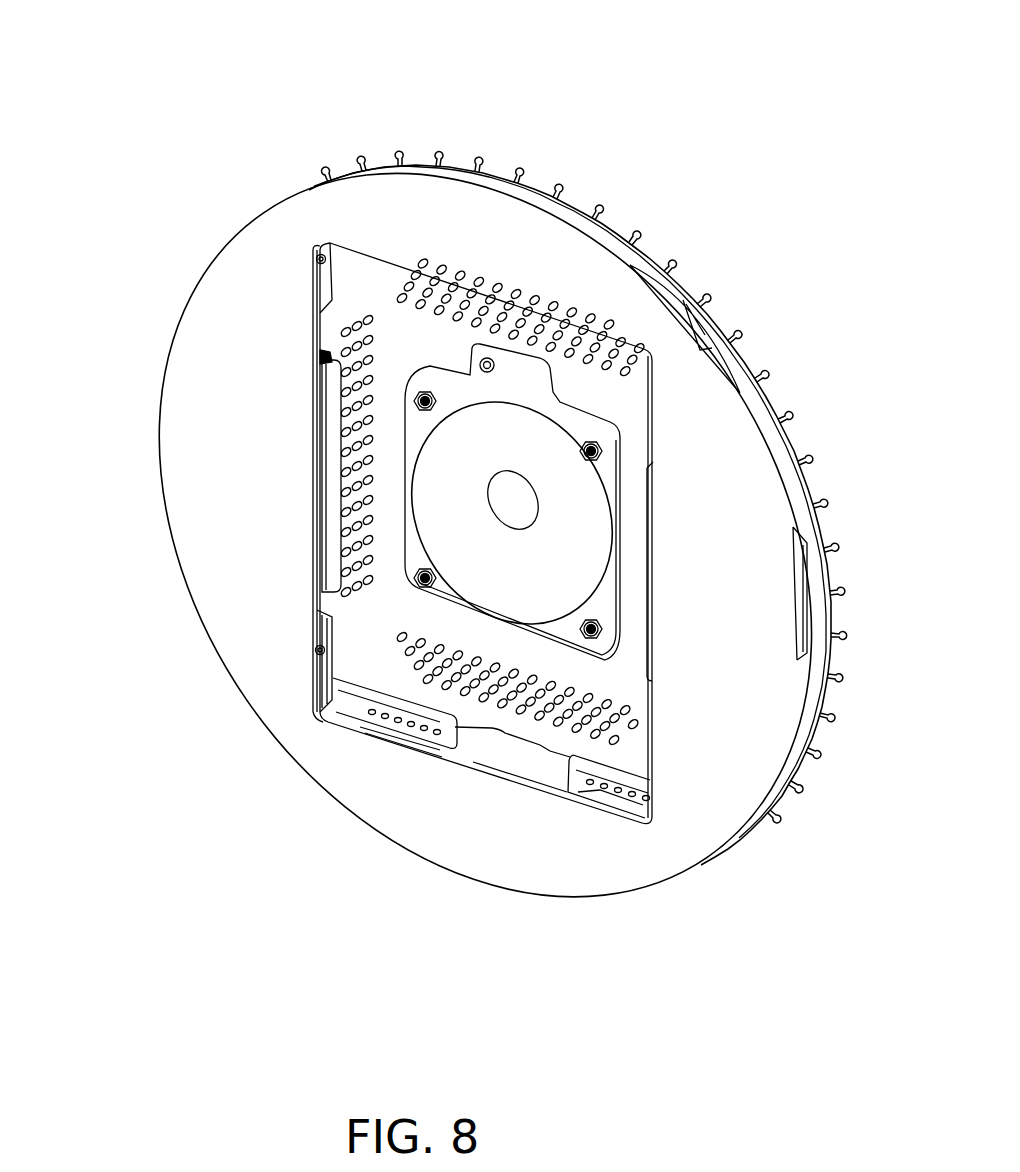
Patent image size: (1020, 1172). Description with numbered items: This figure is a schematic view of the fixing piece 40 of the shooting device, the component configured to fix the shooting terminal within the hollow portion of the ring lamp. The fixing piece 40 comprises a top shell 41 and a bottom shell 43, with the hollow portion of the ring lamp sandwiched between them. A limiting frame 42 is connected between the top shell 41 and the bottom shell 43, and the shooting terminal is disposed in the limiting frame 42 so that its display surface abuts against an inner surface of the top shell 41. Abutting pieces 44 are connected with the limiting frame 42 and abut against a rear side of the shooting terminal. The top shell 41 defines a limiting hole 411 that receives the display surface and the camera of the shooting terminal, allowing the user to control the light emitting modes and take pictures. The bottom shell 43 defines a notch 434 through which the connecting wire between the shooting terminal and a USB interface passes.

The fixing piece 40 is at (788, 103).
The top shell 41 is at (205, 350).
The limiting hole 411 is at (353, 282).
The limiting frame 42 is at (319, 728).
The bottom shell 43 is at (770, 397).
The abutting pieces 44 is at (333, 513).
The notch 434 is at (515, 765).